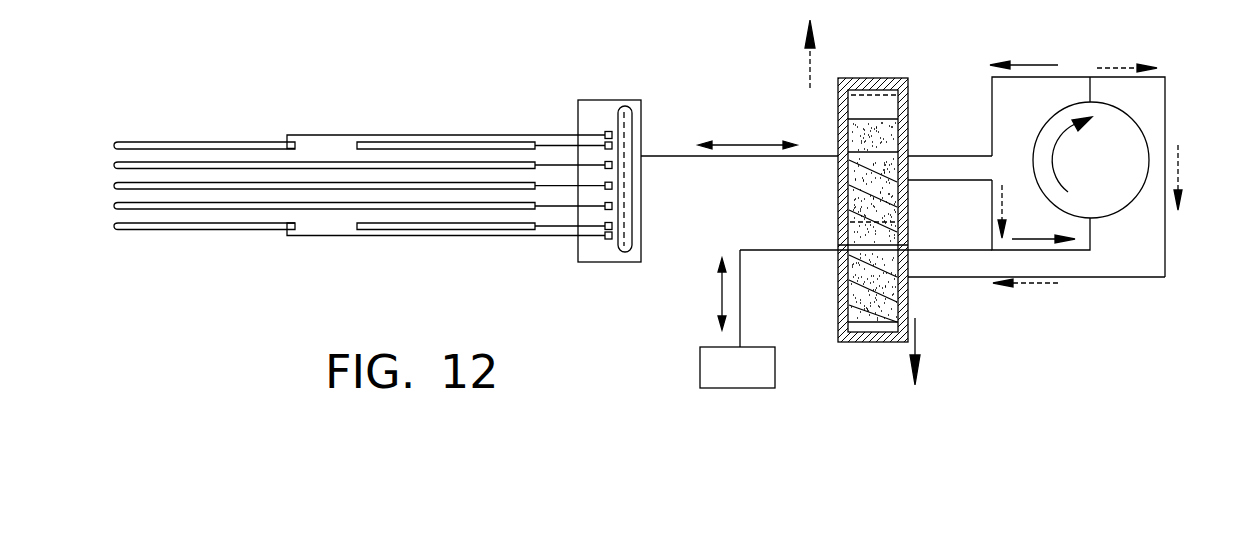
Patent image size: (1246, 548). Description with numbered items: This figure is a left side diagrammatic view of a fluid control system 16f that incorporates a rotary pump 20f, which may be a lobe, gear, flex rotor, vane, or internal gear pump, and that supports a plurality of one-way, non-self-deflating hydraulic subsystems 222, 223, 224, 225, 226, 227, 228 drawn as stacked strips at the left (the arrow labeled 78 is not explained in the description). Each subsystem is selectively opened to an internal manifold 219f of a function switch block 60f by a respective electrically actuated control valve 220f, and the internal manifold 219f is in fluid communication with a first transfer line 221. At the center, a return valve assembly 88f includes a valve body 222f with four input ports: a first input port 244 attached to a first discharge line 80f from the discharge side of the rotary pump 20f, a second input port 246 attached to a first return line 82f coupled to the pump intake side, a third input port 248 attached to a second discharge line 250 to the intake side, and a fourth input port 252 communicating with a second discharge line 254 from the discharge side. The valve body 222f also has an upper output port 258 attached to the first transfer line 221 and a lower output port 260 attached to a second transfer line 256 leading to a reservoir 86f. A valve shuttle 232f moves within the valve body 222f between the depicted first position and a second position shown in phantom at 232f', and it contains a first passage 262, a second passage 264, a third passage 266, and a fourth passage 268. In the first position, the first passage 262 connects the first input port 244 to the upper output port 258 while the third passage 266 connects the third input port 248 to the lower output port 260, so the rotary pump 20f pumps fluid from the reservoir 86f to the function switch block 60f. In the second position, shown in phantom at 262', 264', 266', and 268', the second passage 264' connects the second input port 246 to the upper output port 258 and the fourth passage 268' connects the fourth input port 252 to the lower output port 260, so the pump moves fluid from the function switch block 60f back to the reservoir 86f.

The sensor cartridge 78 is at (534, 108).
The hydraulic subsystem 222 is at (115, 142).
The hydraulic subsystem 223 is at (357, 143).
The hydraulic subsystem 224 is at (320, 162).
The hydraulic subsystem 225 is at (114, 163).
The hydraulic subsystem 226 is at (320, 212).
The hydraulic subsystem 227 is at (397, 230).
The hydraulic subsystem 228 is at (198, 230).
The function switch block 60f is at (610, 100).
The internal manifold 219f is at (623, 121).
The electrically actuated control valve 220f is at (613, 206).
The first transfer line 221 is at (702, 157).
The fluid control system 16f is at (708, 67).
The return valve assembly 88f is at (917, 63).
The valve body 222f is at (905, 78).
The valve shuttle 232f is at (833, 98).
The valve shuttle in second position 232f' is at (804, 54).
The upper output port 258 is at (849, 128).
The first passage 262 is at (837, 200).
The first passage in second position 262' is at (935, 119).
The first input port 244 is at (907, 142).
The second input port 246 is at (908, 181).
The second passage 264 is at (940, 231).
The second passage in second position 264' is at (947, 213).
The third passage 266 is at (792, 237).
The third passage in second position 266' is at (833, 216).
The lower output port 260 is at (838, 246).
The fourth passage 268 is at (837, 323).
The fourth passage in second position 268' is at (837, 288).
The third input port 248 is at (908, 251).
The fourth input port 252 is at (915, 277).
The second transfer line 256 is at (740, 262).
The reservoir 86f is at (700, 347).
The first discharge line 80f is at (1062, 77).
The rotary pump 20f is at (1093, 102).
The second discharge line 254 is at (1165, 120).
The first return line 82f is at (968, 180).
The second discharge line 250 is at (1070, 252).